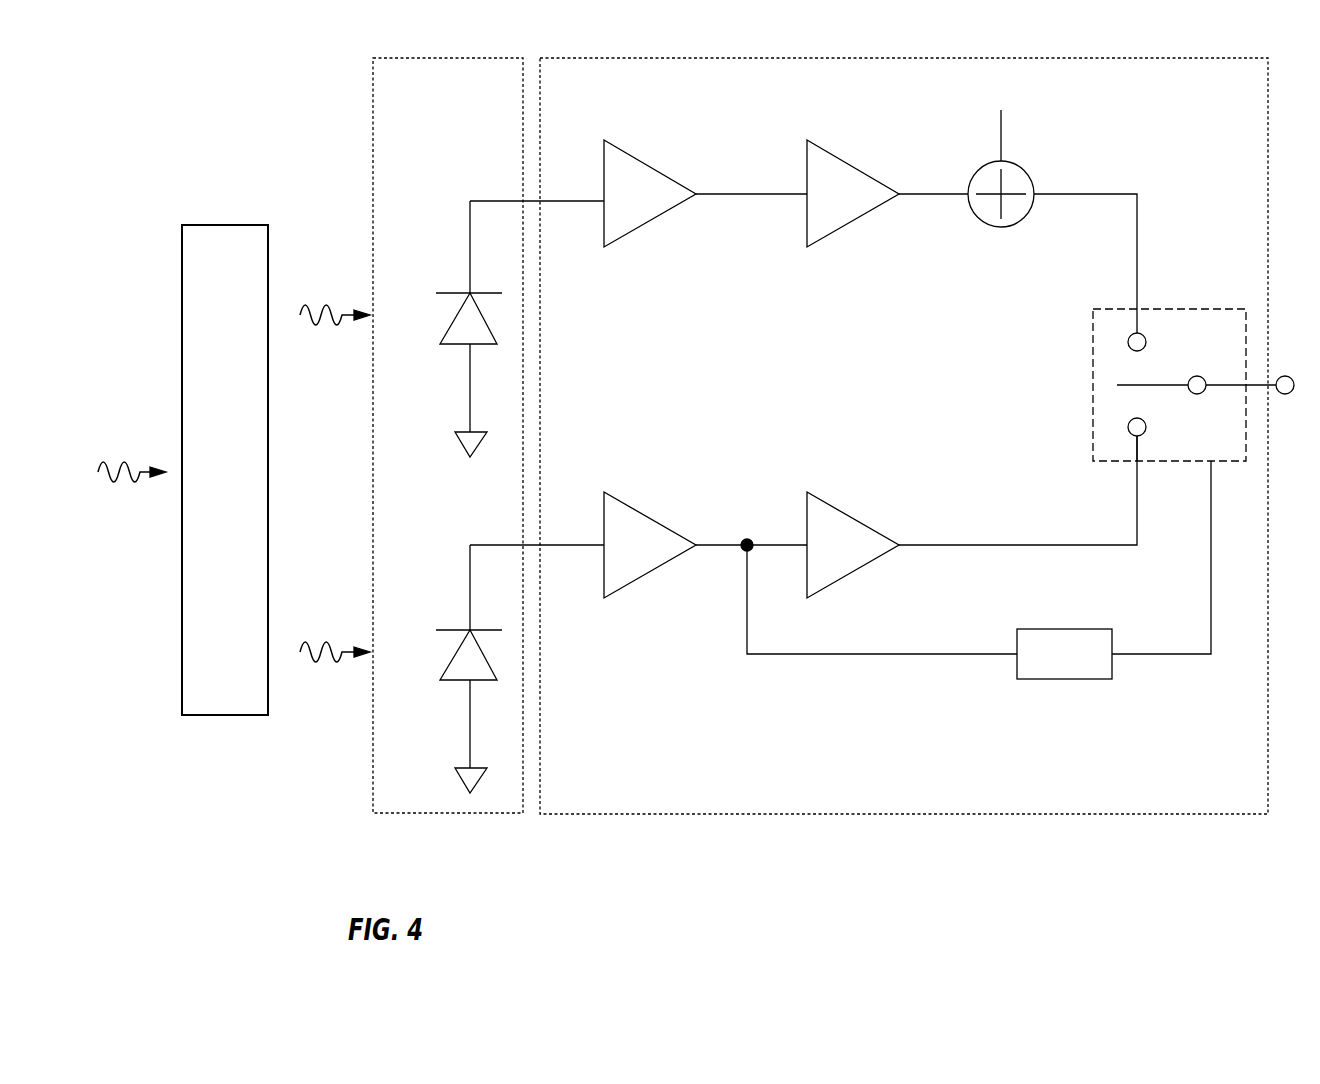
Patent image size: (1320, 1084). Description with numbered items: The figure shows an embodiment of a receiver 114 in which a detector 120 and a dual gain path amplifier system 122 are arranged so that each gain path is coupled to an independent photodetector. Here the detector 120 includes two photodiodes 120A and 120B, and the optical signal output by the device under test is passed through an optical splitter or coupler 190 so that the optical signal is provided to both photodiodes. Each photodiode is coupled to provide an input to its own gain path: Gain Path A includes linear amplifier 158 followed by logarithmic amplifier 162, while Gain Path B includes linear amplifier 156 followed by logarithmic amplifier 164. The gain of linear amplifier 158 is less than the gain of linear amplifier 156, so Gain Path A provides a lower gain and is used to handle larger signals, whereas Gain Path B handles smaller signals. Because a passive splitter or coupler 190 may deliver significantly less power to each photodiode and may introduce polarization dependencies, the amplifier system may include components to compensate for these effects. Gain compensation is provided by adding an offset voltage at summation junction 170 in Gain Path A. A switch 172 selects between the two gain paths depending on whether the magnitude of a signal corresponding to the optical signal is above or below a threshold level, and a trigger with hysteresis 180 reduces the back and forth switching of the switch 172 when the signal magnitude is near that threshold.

The receiver 114 is at (1048, 882).
The detector 120 is at (442, 813).
The photodiode 120A is at (458, 345).
The photodiode 120B is at (458, 681).
The dual gain path amplifier system 122 is at (810, 814).
The linear amplifier 156 is at (633, 582).
The linear amplifier 158 is at (637, 228).
The logarithmic amplifier 162 is at (825, 240).
The logarithmic amplifier 164 is at (830, 502).
The summation junction 170 is at (1023, 168).
The switch 172 is at (1100, 461).
The trigger with hysteresis 180 is at (1085, 629).
The optical splitter or coupler 190 is at (225, 470).